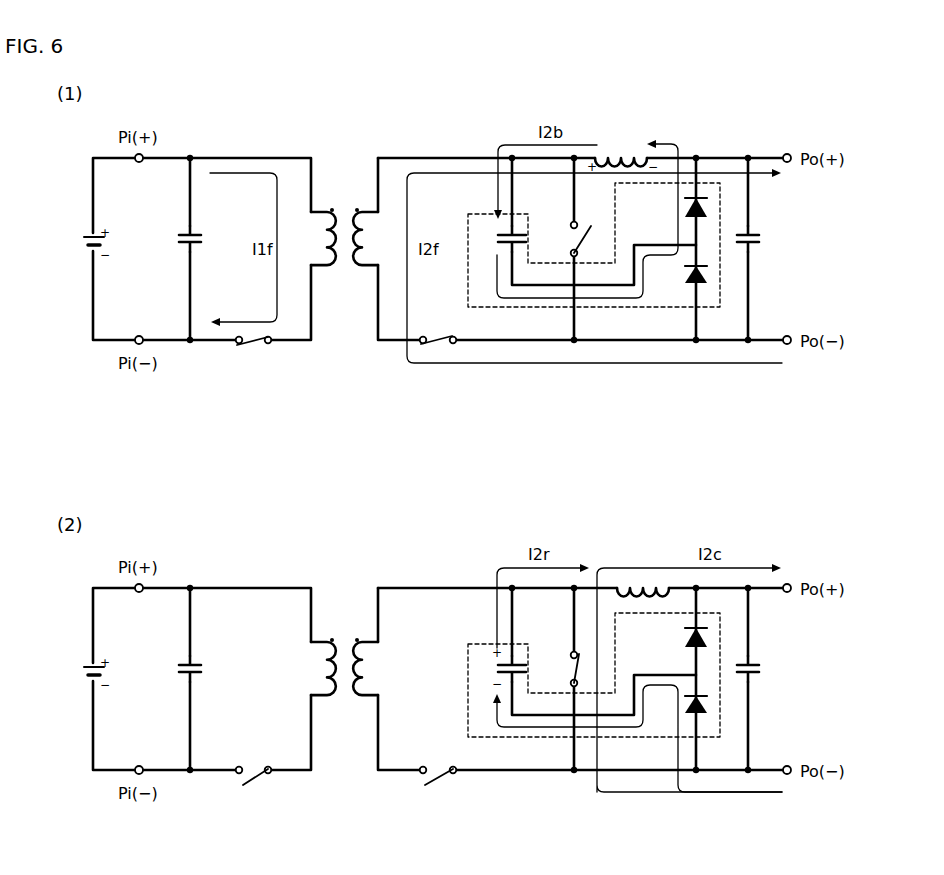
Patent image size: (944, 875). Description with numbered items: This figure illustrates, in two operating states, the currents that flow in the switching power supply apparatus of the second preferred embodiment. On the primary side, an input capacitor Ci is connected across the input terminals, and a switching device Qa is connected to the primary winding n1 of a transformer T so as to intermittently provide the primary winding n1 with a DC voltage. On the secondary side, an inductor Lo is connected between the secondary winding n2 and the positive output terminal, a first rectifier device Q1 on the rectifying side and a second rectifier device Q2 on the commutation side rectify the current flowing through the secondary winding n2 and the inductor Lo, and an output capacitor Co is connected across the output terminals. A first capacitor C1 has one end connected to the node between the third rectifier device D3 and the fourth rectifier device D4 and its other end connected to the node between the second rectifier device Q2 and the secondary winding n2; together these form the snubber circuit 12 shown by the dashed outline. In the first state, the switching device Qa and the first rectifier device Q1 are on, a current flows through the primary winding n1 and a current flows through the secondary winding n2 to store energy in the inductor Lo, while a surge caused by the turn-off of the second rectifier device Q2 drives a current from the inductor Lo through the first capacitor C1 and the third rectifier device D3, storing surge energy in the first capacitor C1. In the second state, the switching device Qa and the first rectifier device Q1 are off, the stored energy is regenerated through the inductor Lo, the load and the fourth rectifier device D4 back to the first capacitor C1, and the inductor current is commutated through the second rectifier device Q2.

The snubber circuit 12 is at (720, 272).
The input capacitor Ci is at (179, 454).
The switching device Qa is at (254, 575).
The transformer T is at (346, 396).
The primary winding n1 is at (314, 451).
The secondary winding n2 is at (348, 608).
The first rectifier device Q1 is at (438, 548).
The first capacitor C1 is at (501, 454).
The second rectifier device Q2 is at (565, 454).
The third rectifier device D3 is at (680, 424).
The fourth rectifier device D4 is at (680, 492).
The inductor Lo is at (632, 367).
The output capacitor Co is at (760, 454).